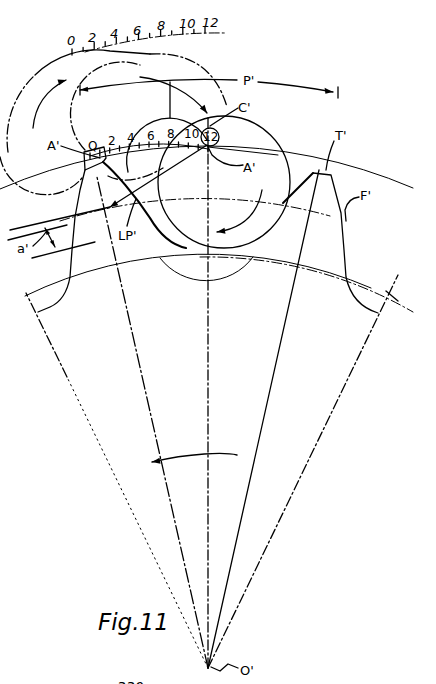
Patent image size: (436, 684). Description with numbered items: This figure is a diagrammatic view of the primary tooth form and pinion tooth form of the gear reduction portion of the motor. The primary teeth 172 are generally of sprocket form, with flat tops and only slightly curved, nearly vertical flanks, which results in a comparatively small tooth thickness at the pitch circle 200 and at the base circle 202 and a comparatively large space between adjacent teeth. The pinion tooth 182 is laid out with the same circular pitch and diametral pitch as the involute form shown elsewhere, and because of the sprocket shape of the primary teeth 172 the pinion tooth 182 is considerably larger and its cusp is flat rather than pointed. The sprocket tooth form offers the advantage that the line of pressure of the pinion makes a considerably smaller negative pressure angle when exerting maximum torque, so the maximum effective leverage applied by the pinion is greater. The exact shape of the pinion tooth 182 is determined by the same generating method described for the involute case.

The primary teeth 172 is at (341, 188).
The pinion tooth 182 is at (45, 63).
The pitch circle 200 is at (350, 222).
The base circle 202 is at (330, 273).